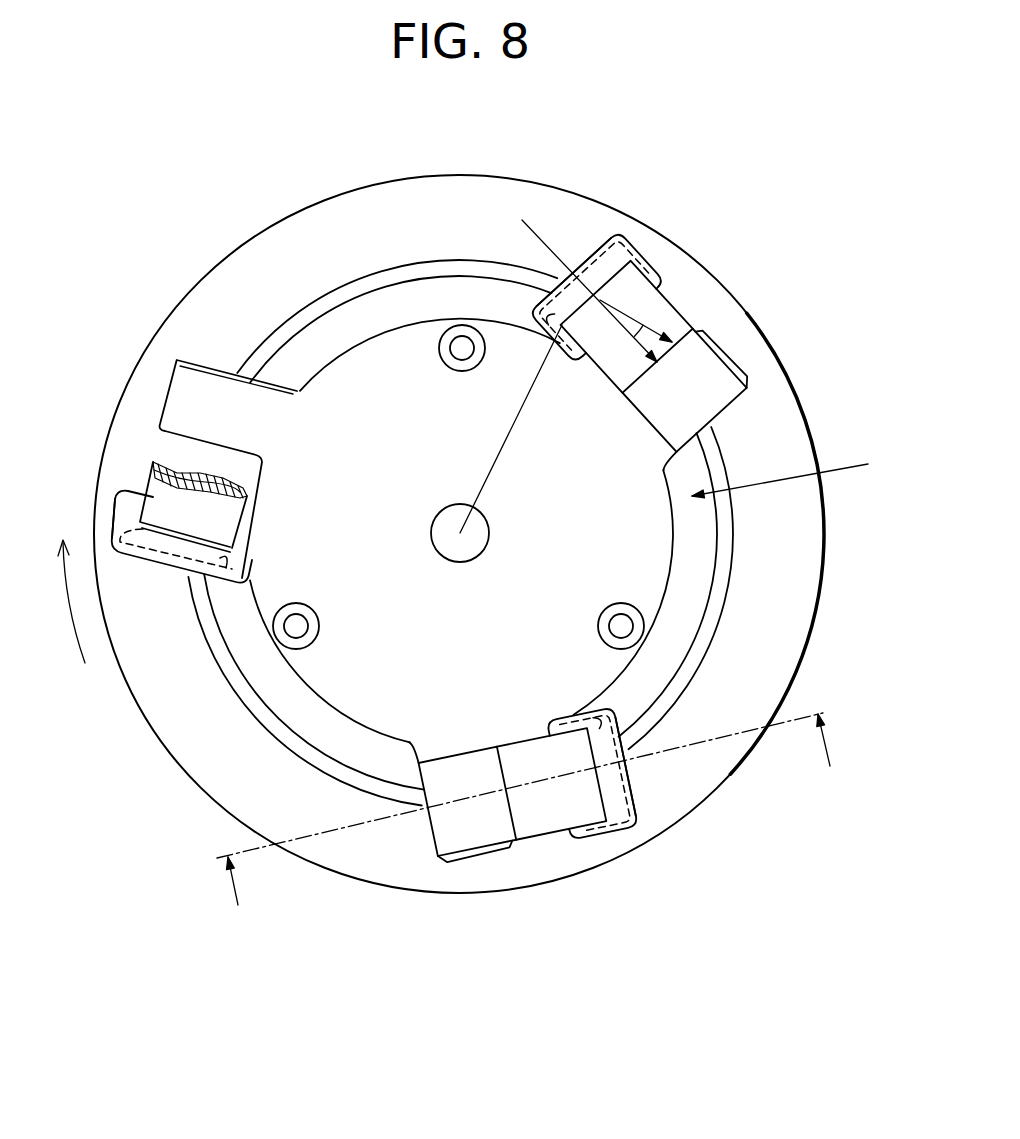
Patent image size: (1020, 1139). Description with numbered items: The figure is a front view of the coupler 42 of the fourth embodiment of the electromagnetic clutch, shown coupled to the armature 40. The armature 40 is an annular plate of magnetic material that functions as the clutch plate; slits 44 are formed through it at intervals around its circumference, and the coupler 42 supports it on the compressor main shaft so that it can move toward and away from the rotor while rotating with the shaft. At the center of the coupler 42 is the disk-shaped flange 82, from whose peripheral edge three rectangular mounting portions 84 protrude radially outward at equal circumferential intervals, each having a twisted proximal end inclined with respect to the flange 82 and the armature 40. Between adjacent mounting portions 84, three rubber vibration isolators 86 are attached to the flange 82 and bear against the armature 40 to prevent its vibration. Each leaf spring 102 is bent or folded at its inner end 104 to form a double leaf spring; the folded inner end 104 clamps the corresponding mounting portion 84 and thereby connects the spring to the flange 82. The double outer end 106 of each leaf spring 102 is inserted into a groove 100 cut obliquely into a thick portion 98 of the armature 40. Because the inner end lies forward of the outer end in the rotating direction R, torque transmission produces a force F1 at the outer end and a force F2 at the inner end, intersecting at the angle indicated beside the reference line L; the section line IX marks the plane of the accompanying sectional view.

The armature 40 is at (797, 563).
The coupler 42 is at (796, 474).
The slits 44 is at (722, 580).
The flange 82 is at (660, 526).
The mounting portions 84 is at (722, 347).
The rubber vibration isolators 86 is at (462, 345).
The thick portion 98 is at (655, 262).
The groove 100 is at (600, 700).
The leaf spring 102 is at (658, 304).
The folded inner end 104 is at (735, 397).
The double outer end 106 is at (605, 262).
The reference line L is at (550, 246).
The force F1 is at (685, 330).
The force F2 is at (640, 390).
The rotating direction R is at (70, 607).
The section line IX- IX is at (532, 828).